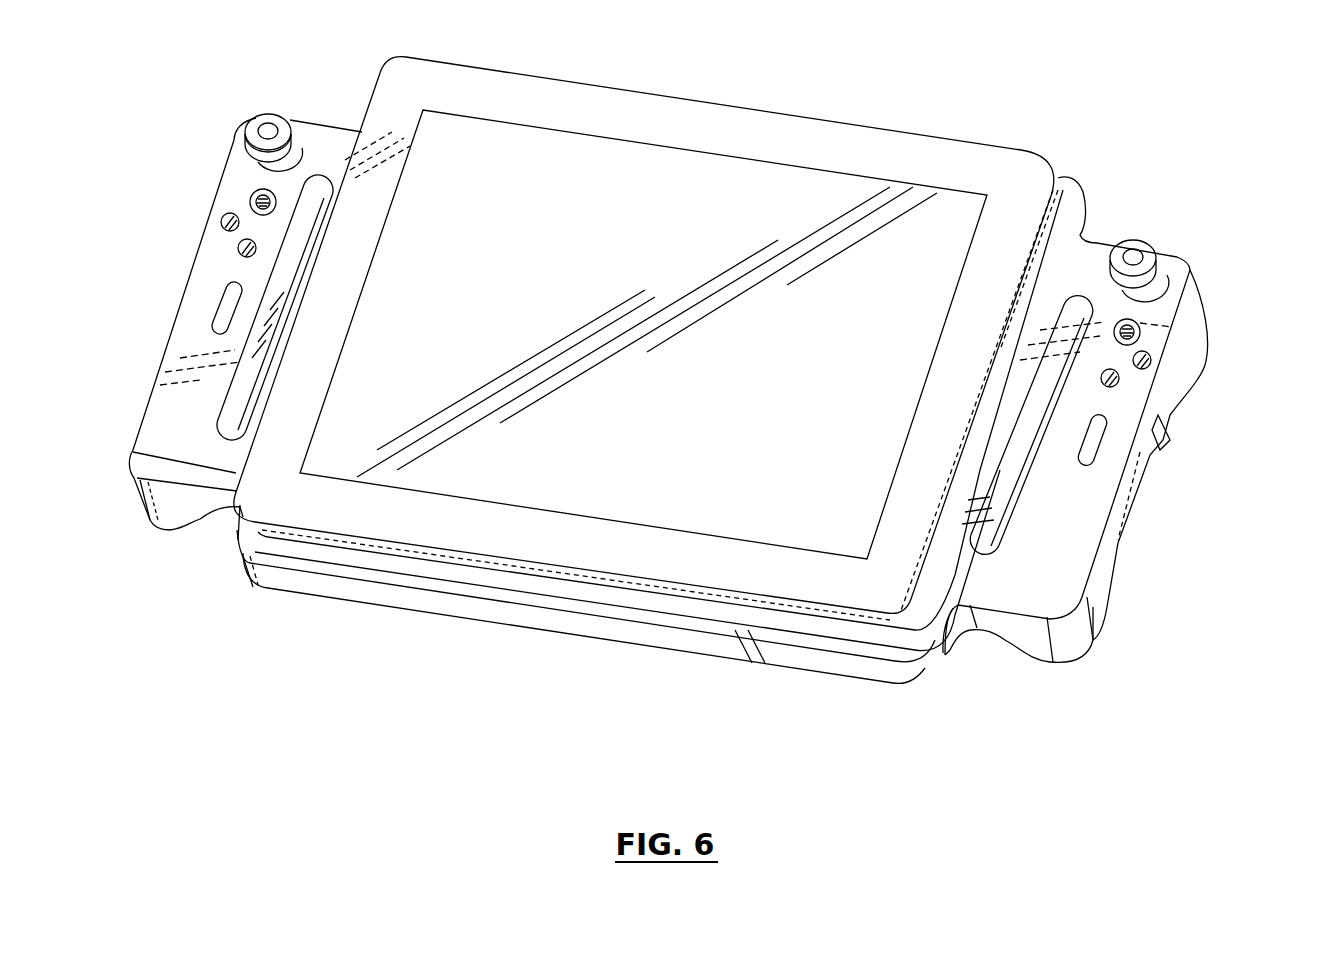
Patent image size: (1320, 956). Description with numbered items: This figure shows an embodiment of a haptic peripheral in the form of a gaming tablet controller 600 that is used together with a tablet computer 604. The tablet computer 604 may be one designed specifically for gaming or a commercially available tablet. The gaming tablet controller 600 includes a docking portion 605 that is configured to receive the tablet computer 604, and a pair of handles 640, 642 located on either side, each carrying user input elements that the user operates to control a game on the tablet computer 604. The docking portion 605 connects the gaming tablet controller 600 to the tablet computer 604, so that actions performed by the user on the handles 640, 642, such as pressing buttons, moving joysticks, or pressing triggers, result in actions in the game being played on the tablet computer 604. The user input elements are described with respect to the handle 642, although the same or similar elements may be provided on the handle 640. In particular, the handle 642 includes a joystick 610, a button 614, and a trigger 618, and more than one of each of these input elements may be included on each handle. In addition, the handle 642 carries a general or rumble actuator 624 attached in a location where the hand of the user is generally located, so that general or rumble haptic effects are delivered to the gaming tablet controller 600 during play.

The gaming tablet controller 600 is at (697, 425).
The tablet computer 604 is at (930, 153).
The docking portion 605 is at (482, 575).
The joystick 610 is at (1130, 257).
The button 614 is at (1135, 337).
The trigger 618 is at (1203, 342).
The general or rumble actuator 624 is at (1158, 443).
The handle 640 is at (202, 290).
The handle 642 is at (1129, 403).